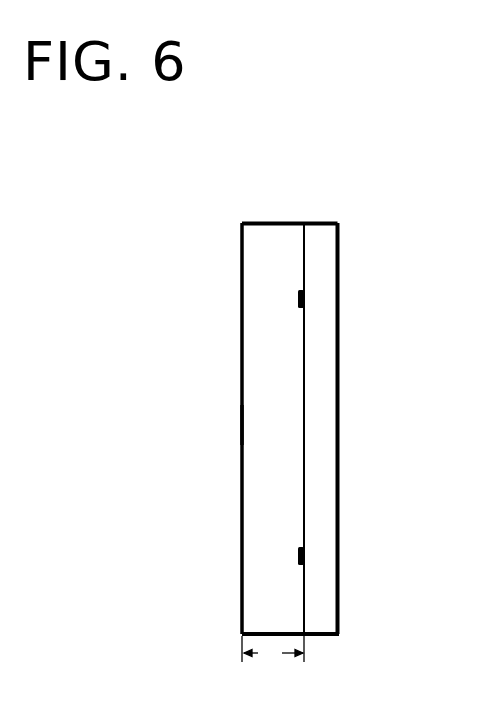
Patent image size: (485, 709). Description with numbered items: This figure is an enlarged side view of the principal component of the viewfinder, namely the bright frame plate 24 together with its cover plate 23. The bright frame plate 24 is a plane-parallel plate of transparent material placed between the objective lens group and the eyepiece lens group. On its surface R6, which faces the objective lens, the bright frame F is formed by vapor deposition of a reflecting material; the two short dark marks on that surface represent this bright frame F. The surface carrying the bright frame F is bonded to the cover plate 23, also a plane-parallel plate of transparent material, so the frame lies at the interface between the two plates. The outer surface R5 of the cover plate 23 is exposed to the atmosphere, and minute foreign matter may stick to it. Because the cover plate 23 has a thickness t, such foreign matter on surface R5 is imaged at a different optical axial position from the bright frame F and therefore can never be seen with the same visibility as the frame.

The cover plate 23 is at (267, 221).
The bright frame plate 24 is at (320, 221).
The bright frame F is at (298, 296).
The outer surface of cover plate R5 is at (241, 425).
The surface of bright frame plate R6 is at (303, 488).
The thickness of cover plate t is at (273, 652).